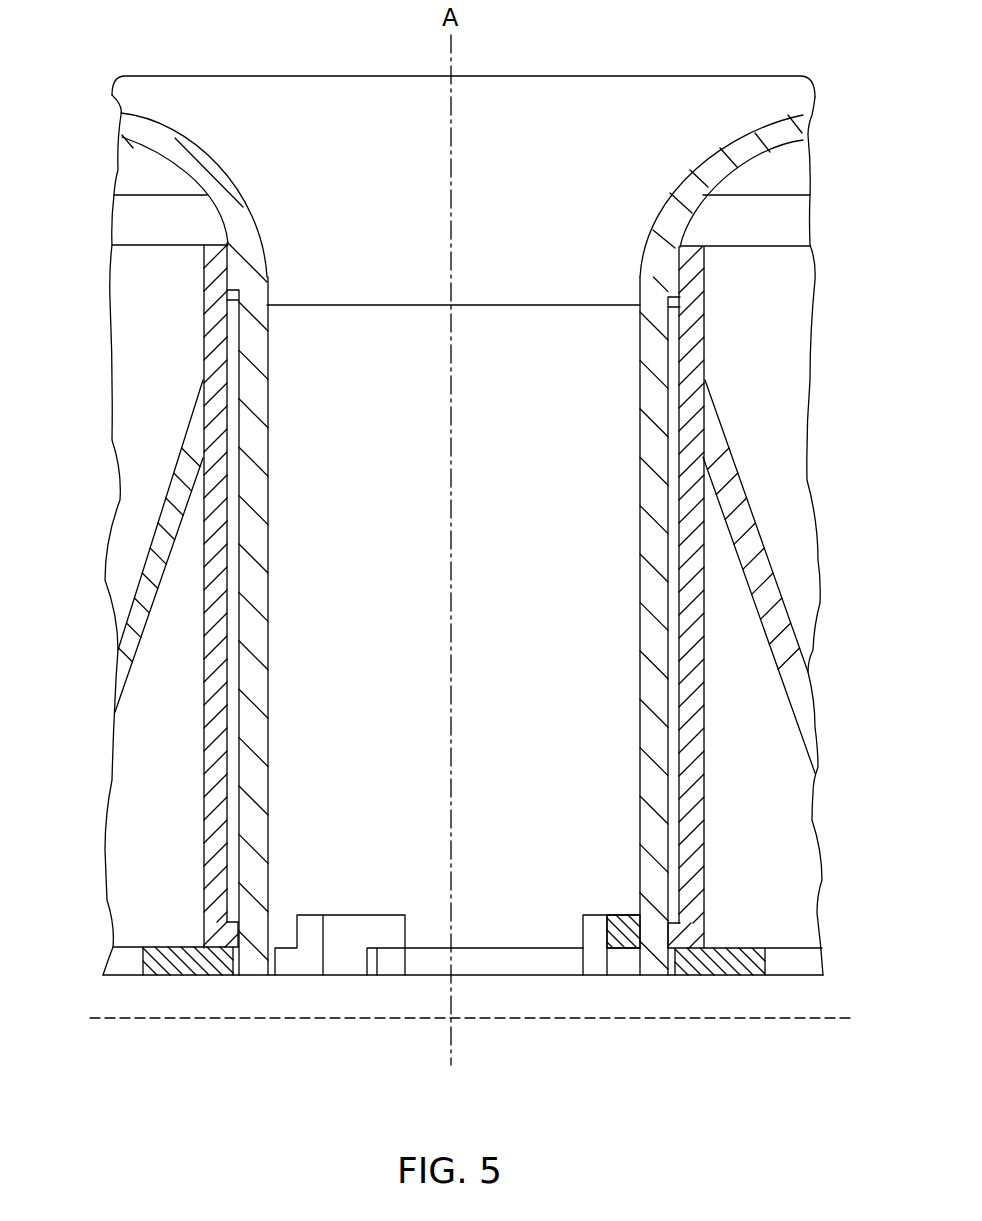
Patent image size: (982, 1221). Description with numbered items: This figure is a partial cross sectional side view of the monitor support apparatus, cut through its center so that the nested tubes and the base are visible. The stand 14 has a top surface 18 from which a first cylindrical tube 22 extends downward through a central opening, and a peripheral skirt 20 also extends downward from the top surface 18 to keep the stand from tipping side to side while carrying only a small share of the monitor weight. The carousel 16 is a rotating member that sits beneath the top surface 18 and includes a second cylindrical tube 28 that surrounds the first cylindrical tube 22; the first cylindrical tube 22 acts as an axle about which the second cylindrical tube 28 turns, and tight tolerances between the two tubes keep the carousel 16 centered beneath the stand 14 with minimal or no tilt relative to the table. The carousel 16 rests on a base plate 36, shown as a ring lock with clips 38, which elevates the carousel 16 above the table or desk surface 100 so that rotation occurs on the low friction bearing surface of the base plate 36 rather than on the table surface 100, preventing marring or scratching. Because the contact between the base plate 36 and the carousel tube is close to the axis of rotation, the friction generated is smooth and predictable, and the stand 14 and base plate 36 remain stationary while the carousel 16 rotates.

The stand 14 is at (135, 152).
The carousel 16 is at (185, 433).
The top surface 18 is at (300, 76).
The peripheral skirt 20 is at (477, 965).
The first cylindrical tube 22 is at (255, 943).
The second cylindrical tube 28 is at (205, 925).
The base plate 36 is at (192, 976).
The clips 38 is at (625, 950).
The table or desk surface 100 is at (810, 1017).